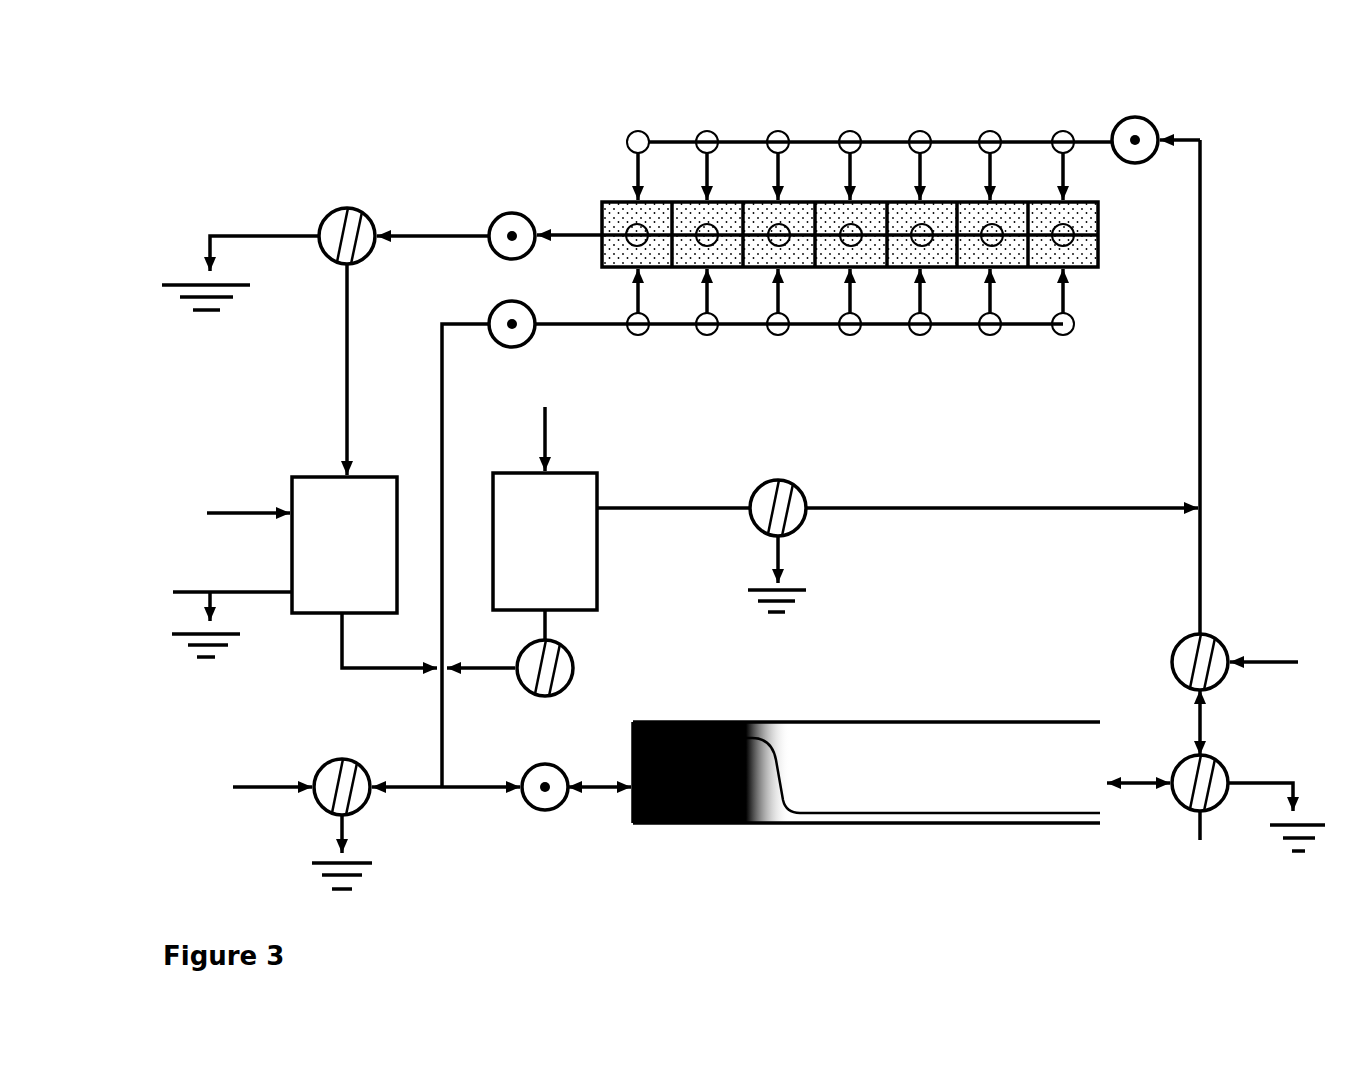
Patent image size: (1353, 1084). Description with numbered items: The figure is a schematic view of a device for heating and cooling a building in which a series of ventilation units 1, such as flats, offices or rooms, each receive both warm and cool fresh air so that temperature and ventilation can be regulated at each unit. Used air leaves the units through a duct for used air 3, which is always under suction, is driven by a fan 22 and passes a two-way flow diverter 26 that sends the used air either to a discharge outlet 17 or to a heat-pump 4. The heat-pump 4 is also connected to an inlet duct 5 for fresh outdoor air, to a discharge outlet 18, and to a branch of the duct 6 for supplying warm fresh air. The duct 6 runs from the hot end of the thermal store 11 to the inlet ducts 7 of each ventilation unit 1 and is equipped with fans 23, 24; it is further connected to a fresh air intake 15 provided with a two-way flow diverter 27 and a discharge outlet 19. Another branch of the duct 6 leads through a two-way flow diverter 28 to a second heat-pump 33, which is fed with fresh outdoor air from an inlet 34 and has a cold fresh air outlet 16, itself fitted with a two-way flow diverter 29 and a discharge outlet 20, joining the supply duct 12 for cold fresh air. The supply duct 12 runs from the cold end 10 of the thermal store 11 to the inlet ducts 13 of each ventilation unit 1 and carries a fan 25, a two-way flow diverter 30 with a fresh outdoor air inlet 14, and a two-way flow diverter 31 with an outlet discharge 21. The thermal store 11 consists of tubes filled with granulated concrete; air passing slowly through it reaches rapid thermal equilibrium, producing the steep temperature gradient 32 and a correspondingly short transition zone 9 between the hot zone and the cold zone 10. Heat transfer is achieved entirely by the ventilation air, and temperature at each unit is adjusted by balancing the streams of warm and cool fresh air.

The ventilation unit 1 is at (1058, 225).
The duct for used air 3 is at (577, 234).
The heat-pump 4 is at (344, 545).
The inlet duct for fresh outdoor air 5 is at (232, 515).
The duct for supplying warm fresh air 6 is at (820, 327).
The inlet duct 7 is at (988, 290).
The transition zone 9 is at (759, 728).
The cold end 10 is at (866, 772).
The thermal store 11 is at (886, 722).
The supply duct for cold fresh air 12 is at (808, 141).
The inlet duct 13 is at (988, 184).
The fresh outdoor air inlet 14 is at (1283, 664).
The inlet 15 is at (254, 789).
The cold fresh air outlet 16 is at (915, 505).
The discharge outlet 17 is at (251, 236).
The discharge outlet 18 is at (209, 620).
The discharge outlet 19 is at (350, 845).
The discharge outlet 20 is at (786, 563).
The outlet discharge 21 is at (1290, 815).
The fan 22 is at (499, 214).
The fan 23 is at (536, 803).
The fan 24 is at (491, 316).
The fan 25 is at (1139, 118).
The 2-way flow diverter 26 is at (325, 214).
The 2-way flow diverter 27 is at (352, 762).
The 2-way flow diverter 28 is at (572, 664).
The 2-way flow diverter 29 is at (778, 487).
The valve 30 is at (1180, 694).
The 2-way flow diverter 31 is at (1167, 812).
The temperature gradient 32 is at (776, 765).
The second heat-pump 33 is at (545, 556).
The inlet 34 is at (567, 433).